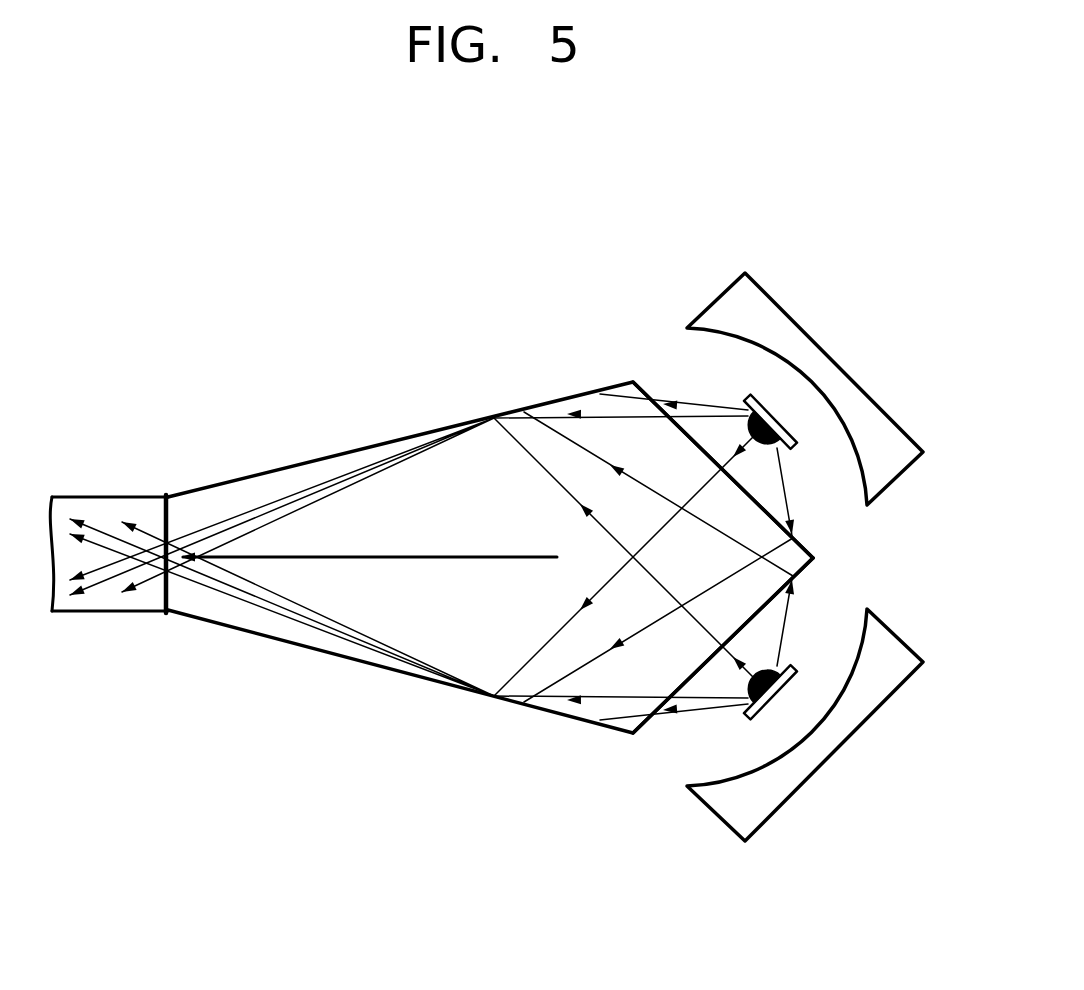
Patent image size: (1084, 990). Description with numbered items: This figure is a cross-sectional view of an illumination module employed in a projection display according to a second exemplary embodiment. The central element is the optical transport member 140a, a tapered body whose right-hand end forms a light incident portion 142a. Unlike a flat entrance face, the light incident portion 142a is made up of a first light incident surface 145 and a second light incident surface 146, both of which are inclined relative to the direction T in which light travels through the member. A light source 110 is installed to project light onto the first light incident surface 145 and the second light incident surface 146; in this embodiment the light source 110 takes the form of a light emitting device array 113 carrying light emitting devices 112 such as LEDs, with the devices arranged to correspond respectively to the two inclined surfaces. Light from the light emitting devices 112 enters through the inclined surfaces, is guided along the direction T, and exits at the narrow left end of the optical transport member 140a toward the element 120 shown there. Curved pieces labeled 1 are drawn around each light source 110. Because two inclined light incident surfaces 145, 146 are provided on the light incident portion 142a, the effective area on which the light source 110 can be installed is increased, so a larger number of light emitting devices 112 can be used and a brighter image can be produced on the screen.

The housing 1 is at (823, 348).
The light source 110 is at (755, 546).
The light emitting device 112 is at (661, 516).
The light emitting device array 113 is at (797, 440).
The display panel 120 is at (127, 480).
The optical transport member 140a is at (420, 687).
The light incident portion 142a is at (800, 557).
The first light incident surface 145 is at (813, 550).
The second light incident surface 146 is at (810, 573).
The direction in which light travels T is at (500, 557).